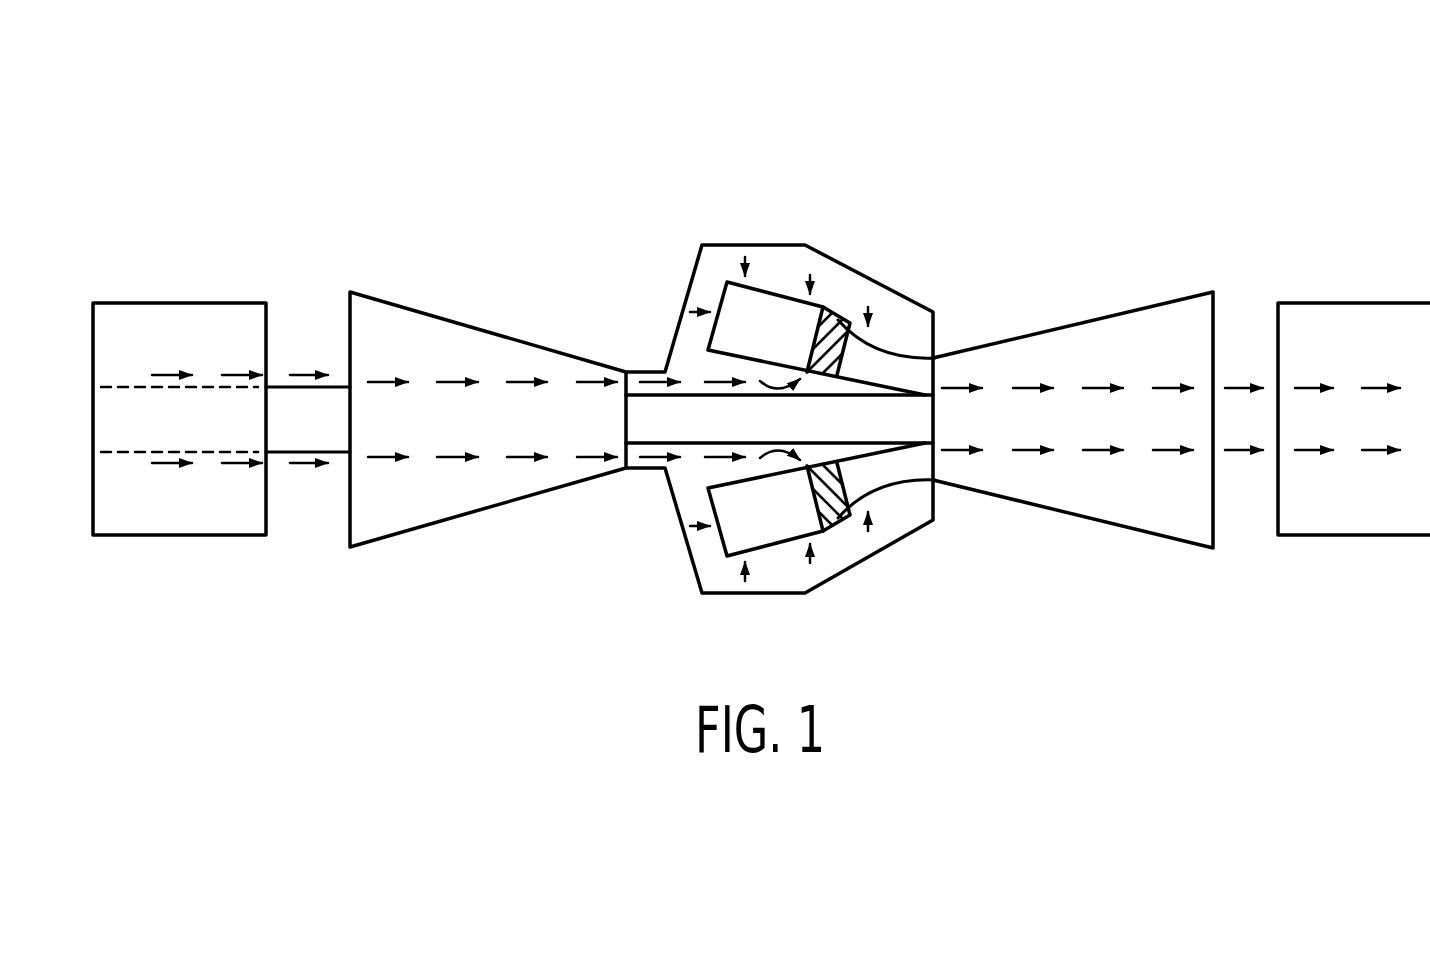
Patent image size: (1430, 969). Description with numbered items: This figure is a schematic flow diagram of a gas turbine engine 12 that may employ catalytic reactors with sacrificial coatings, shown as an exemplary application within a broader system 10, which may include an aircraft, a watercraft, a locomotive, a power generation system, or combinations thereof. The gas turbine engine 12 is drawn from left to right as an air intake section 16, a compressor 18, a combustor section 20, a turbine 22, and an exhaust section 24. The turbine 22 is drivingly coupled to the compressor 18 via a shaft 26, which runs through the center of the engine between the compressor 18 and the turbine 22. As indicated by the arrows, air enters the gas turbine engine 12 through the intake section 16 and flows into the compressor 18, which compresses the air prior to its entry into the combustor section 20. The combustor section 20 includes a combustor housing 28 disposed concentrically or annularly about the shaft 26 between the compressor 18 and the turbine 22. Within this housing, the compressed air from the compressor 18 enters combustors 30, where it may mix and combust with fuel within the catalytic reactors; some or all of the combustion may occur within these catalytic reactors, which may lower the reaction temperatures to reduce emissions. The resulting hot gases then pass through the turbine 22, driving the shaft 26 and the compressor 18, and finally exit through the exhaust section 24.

The system 10 is at (1143, 86).
The gas turbine engine 12 is at (779, 193).
The air intake section 16 is at (178, 303).
The compressor 18 is at (490, 333).
The combustor section 20 is at (898, 286).
The turbine 22 is at (1062, 328).
The exhaust section 24 is at (1362, 303).
The shaft 26 is at (857, 434).
The combustor housing 28 is at (820, 252).
The combustor 30 is at (777, 548).